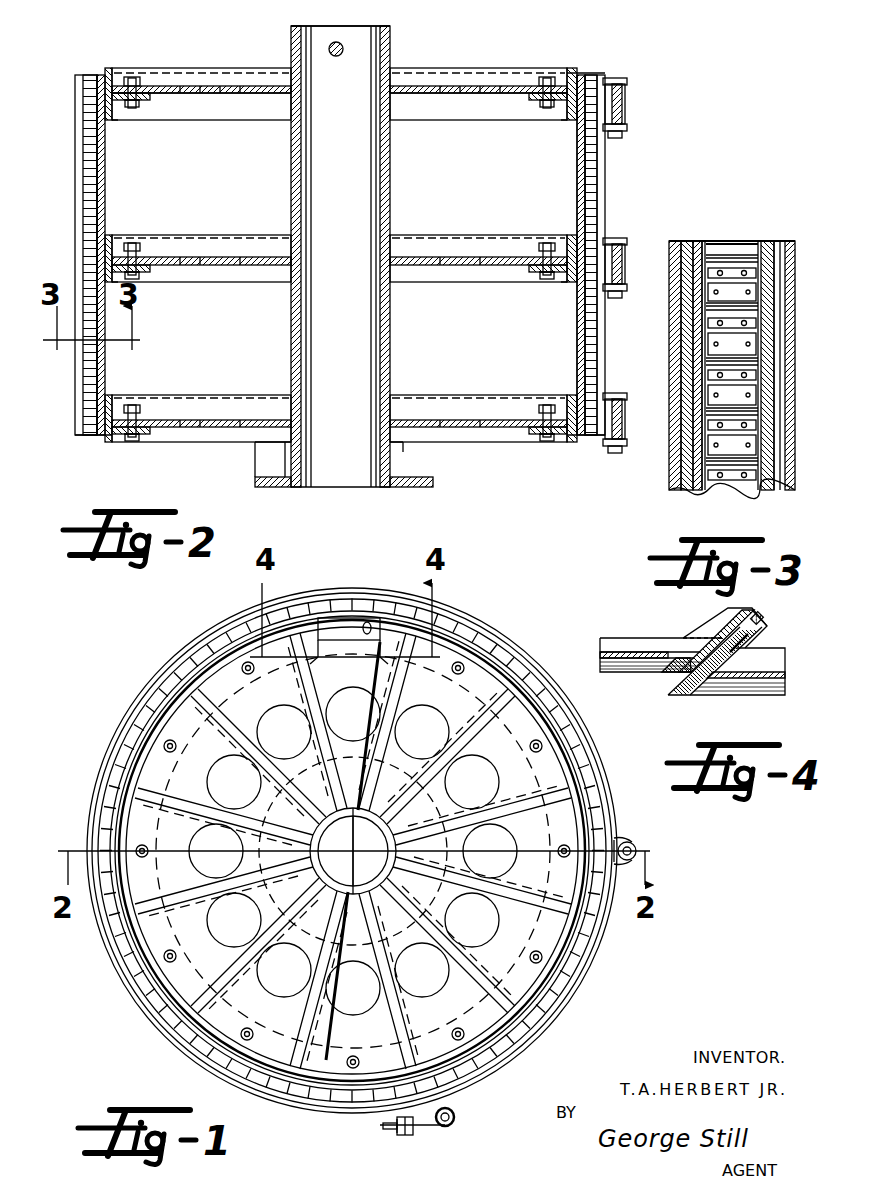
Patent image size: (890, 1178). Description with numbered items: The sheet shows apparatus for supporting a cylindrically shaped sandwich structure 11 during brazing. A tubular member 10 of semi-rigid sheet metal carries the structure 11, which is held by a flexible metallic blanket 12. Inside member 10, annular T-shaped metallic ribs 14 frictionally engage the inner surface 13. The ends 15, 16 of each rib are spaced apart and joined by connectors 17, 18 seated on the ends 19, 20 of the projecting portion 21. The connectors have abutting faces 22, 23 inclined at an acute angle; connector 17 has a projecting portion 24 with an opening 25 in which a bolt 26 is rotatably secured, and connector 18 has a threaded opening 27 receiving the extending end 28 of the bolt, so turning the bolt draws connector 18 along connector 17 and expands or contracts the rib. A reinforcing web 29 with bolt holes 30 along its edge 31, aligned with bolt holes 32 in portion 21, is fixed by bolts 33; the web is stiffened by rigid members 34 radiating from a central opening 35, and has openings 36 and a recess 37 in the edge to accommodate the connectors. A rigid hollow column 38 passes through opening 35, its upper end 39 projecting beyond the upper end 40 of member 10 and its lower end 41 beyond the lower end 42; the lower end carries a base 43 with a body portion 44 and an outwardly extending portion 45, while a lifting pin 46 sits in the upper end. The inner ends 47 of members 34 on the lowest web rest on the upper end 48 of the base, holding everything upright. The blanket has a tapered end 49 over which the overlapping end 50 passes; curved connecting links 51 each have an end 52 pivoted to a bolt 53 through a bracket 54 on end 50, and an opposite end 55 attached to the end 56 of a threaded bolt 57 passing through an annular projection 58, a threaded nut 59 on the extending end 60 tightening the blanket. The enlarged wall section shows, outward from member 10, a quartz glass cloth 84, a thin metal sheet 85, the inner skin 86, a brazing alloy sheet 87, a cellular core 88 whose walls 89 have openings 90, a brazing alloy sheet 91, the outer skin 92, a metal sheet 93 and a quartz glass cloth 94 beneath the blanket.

In FIG. 2, the tubular member 10 is at (105, 168).
In FIG. 3, the tubular member 10 is at (795, 470).
In FIG. 2, the sandwich structure 11 is at (90, 74).
In FIG. 1, the sandwich structure 11 is at (515, 655).
In FIG. 2, the flexible metallic blanket 12 is at (78, 90).
In FIG. 3, the flexible metallic blanket 12 is at (669, 324).
In FIG. 1, the flexible metallic blanket 12 is at (497, 640).
In FIG. 2, the inner surface 13 is at (105, 190).
In FIG. 2, the annular metallic ribs 14 is at (109, 68).
In FIG. 1, the rib end 15 is at (384, 660).
In FIG. 1, the rib end 16 is at (316, 660).
In FIG. 4, the connector 17 is at (670, 638).
In FIG. 4, the connector 18 is at (770, 660).
In FIG. 4, the end of projecting portion 19 is at (774, 695).
In FIG. 4, the end of projecting portion 20 is at (645, 652).
In FIG. 2, the projecting portion 21 is at (150, 98).
In FIG. 4, the projecting portion 21 is at (786, 676).
In FIG. 4, the abutting face 22 is at (680, 678).
In FIG. 4, the abutting face 23 is at (684, 684).
In FIG. 4, the projecting portion 24 is at (738, 622).
In FIG. 4, the opening 25 is at (757, 625).
In FIG. 4, the bolt 26 is at (762, 616).
In FIG. 1, the bolt 26 is at (362, 629).
In FIG. 4, the threaded opening 27 is at (695, 697).
In FIG. 4, the extending end 28 is at (744, 655).
In FIG. 2, the reinforcing web 29 is at (438, 85).
In FIG. 1, the reinforcing web 29 is at (420, 758).
In FIG. 2, the bolt holes 30 is at (135, 82).
In FIG. 2, the edge 31 is at (113, 121).
In FIG. 1, the edge 31 is at (240, 672).
In FIG. 2, the bolt holes 32 is at (142, 250).
In FIG. 2, the bolts 33 is at (547, 77).
In FIG. 1, the bolts 33 is at (562, 845).
In FIG. 2, the rigid members 34 is at (260, 68).
In FIG. 1, the rigid members 34 is at (290, 790).
In FIG. 2, the central opening 35 is at (288, 94).
In FIG. 2, the openings 36 is at (470, 93).
In FIG. 1, the openings 36 is at (222, 760).
In FIG. 1, the recess 37 is at (345, 668).
In FIG. 2, the rigid hollow column 38 is at (388, 180).
In FIG. 1, the rigid hollow column 38 is at (390, 845).
In FIG. 2, the upper end 39 is at (386, 28).
In FIG. 2, the upper end 40 is at (576, 73).
In FIG. 2, the lower end 41 is at (393, 488).
In FIG. 2, the lower end 42 is at (105, 437).
In FIG. 2, the base 43 is at (292, 488).
In FIG. 2, the body portion 44 is at (284, 468).
In FIG. 2, the outwardly extending portion 45 is at (255, 482).
In FIG. 2, the lifting pin 46 is at (337, 57).
In FIG. 1, the lifting pin 46 is at (346, 858).
In FIG. 2, the inner ends 47 is at (288, 430).
In FIG. 2, the upper end 48 is at (285, 443).
In FIG. 1, the blanket end 49 is at (570, 702).
In FIG. 1, the blanket end 50 is at (528, 1058).
In FIG. 1, the curved connecting links 51 is at (598, 968).
In FIG. 1, the link end 52 is at (638, 846).
In FIG. 2, the bolt 53 is at (626, 110).
In FIG. 2, the bracket 54 is at (628, 82).
In FIG. 1, the bracket 54 is at (622, 840).
In FIG. 1, the link end 55 is at (456, 1116).
In FIG. 1, the bolt end 56 is at (452, 1124).
In FIG. 1, the threaded bolt 57 is at (415, 1126).
In FIG. 1, the annular projection 58 is at (410, 1136).
In FIG. 1, the threaded nut 59 is at (398, 1134).
In FIG. 1, the extending end 60 is at (385, 1128).
In FIG. 3, the sheet of quartz glass cloth 84 is at (790, 241).
In FIG. 3, the thin flexible sheet of metal 85 is at (779, 241).
In FIG. 3, the inner skin 86 is at (768, 241).
In FIG. 3, the sheet of brazing alloy 87 is at (760, 243).
In FIG. 3, the metallic cellular core 88 is at (742, 241).
In FIG. 3, the walls 89 is at (732, 322).
In FIG. 3, the openings 90 is at (732, 369).
In FIG. 3, the sheet of brazing alloy 91 is at (712, 244).
In FIG. 3, the outer skin 92 is at (708, 241).
In FIG. 3, the thin flexible sheet of metal 93 is at (704, 241).
In FIG. 3, the sheet of quartz glass cloth 94 is at (685, 241).